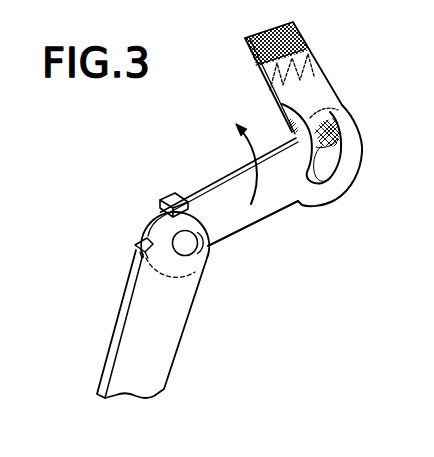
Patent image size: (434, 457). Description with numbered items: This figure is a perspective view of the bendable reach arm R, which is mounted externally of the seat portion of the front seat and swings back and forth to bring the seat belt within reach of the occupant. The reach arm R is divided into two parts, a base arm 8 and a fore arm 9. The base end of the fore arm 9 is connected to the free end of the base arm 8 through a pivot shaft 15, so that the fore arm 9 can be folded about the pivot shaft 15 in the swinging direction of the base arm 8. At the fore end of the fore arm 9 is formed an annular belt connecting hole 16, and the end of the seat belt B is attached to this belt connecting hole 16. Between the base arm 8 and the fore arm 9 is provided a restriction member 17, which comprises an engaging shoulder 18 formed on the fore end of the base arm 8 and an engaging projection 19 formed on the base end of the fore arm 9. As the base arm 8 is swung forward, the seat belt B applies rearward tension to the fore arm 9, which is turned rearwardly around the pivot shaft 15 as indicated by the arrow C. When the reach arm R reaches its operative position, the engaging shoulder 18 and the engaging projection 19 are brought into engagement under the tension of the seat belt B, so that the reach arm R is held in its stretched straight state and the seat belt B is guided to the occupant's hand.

The base arm 8 is at (175, 318).
The fore arm 9 is at (221, 237).
The pivot shaft 15 is at (188, 254).
The belt connecting hole 16 is at (332, 164).
The restriction member 17 is at (136, 162).
The engaging shoulder 18 is at (145, 242).
The engaging projection 19 is at (170, 195).
The seat belt B is at (337, 82).
The arrow indicating rearward turning of the fore arm C is at (246, 153).
The reach arm R is at (247, 255).